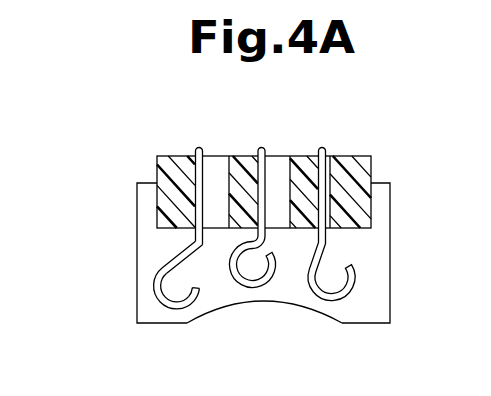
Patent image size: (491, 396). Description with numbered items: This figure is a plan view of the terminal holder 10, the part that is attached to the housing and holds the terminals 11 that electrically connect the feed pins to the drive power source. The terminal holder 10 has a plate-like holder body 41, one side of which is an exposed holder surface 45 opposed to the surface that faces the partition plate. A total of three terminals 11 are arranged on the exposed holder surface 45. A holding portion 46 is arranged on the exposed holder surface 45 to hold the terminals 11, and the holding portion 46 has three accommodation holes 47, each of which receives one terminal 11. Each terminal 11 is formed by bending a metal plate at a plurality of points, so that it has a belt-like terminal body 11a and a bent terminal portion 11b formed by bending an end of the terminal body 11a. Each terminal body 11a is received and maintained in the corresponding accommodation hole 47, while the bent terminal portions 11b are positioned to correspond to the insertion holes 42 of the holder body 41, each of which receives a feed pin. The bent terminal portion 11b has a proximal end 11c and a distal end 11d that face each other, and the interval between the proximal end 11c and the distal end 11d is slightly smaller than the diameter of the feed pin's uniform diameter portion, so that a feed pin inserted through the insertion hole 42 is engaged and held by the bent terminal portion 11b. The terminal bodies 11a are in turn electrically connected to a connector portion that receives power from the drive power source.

The terminal holder 10 is at (409, 155).
The terminal 11 is at (156, 235).
The terminal body 11a is at (193, 214).
The bent terminal portion 11b is at (162, 302).
The proximal end 11c is at (167, 277).
The distal end 11d is at (197, 292).
The holder body 41 is at (391, 209).
The insertion hole 42 is at (267, 258).
The exposed holder surface 45 is at (380, 269).
The holding portion 46 is at (350, 156).
The accommodation hole 47 is at (226, 172).